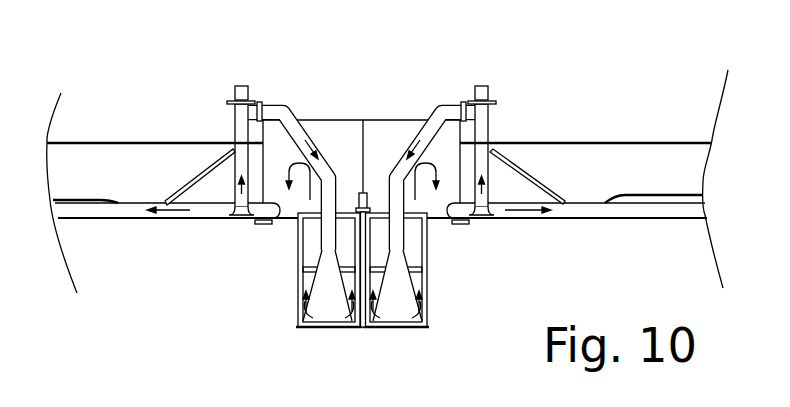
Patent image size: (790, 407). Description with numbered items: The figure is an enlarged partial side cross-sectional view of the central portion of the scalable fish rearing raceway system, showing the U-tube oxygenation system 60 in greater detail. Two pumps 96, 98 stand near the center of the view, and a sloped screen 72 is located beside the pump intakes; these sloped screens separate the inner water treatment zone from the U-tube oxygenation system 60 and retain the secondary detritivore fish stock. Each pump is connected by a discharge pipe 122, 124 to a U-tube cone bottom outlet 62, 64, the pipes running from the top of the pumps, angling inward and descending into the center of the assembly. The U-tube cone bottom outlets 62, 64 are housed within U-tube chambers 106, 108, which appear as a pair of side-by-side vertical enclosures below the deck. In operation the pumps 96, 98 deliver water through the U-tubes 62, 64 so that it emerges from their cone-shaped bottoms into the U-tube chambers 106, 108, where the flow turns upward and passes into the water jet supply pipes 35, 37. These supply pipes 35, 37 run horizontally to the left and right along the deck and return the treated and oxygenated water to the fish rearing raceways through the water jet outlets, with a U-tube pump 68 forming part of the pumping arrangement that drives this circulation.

The water jet supply pipe 35 is at (144, 212).
The water jet supply pipe 37 is at (640, 212).
The U-tube oxygenation system 60 is at (196, 285).
The U-tube cone bottom outlet 62 is at (321, 300).
The U-tube cone bottom outlet 64 is at (398, 316).
The U-tube pump 68 is at (533, 178).
The sloped screen 72 is at (207, 167).
The pump 96 is at (478, 84).
The pump 98 is at (243, 86).
The U-tube chamber 106 is at (408, 245).
The U-tube chamber 108 is at (317, 247).
The discharge pipe 122 is at (297, 117).
The discharge pipe 124 is at (443, 108).